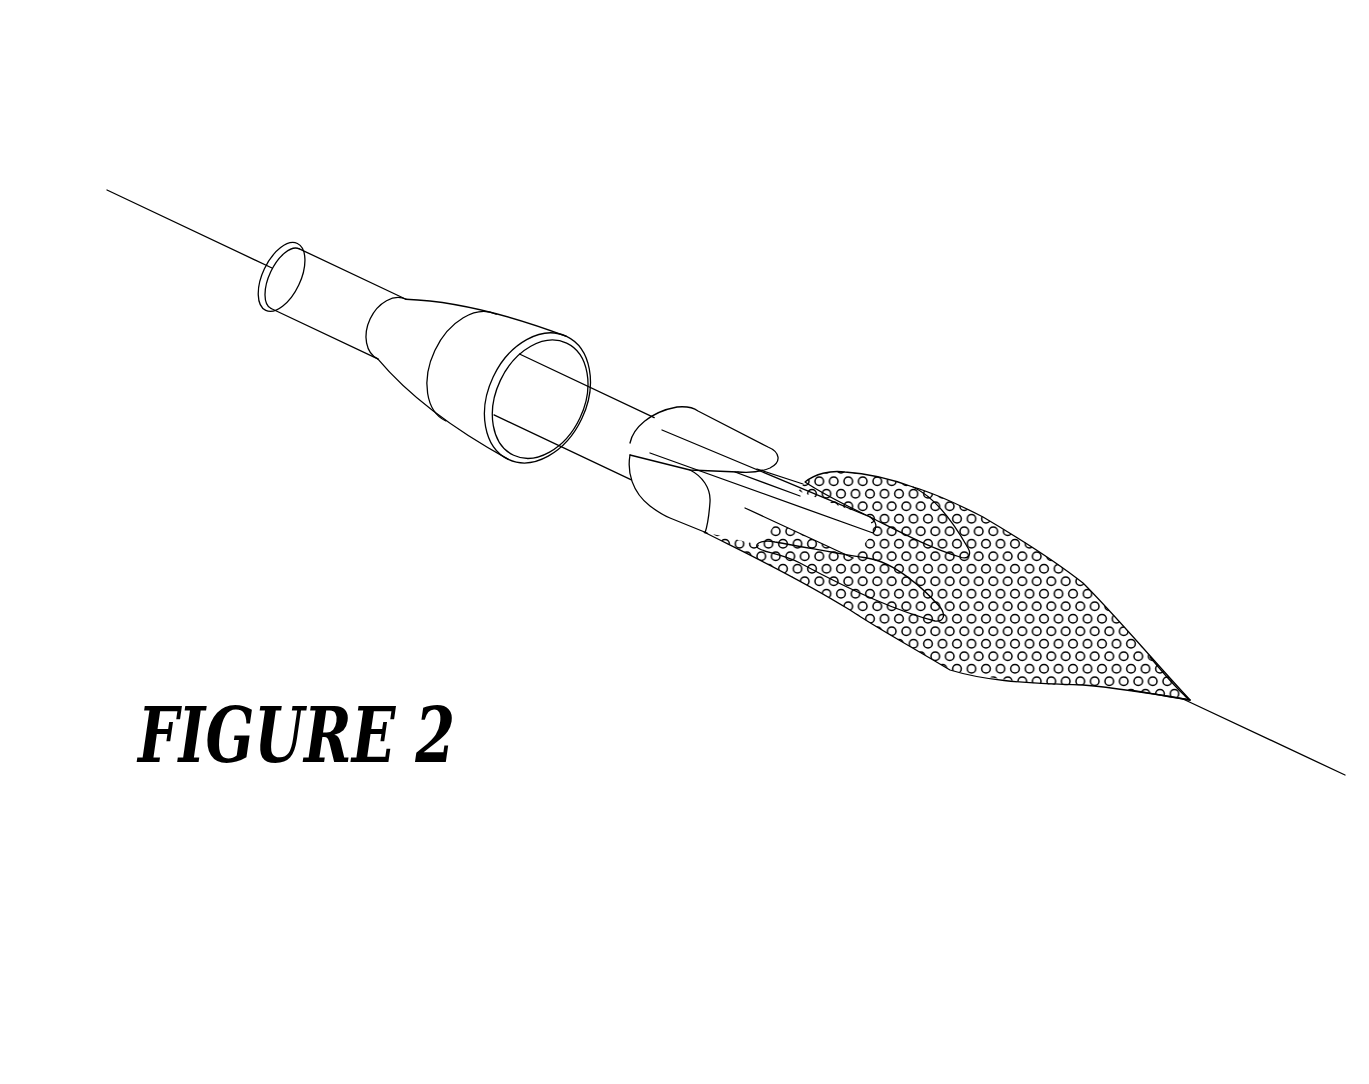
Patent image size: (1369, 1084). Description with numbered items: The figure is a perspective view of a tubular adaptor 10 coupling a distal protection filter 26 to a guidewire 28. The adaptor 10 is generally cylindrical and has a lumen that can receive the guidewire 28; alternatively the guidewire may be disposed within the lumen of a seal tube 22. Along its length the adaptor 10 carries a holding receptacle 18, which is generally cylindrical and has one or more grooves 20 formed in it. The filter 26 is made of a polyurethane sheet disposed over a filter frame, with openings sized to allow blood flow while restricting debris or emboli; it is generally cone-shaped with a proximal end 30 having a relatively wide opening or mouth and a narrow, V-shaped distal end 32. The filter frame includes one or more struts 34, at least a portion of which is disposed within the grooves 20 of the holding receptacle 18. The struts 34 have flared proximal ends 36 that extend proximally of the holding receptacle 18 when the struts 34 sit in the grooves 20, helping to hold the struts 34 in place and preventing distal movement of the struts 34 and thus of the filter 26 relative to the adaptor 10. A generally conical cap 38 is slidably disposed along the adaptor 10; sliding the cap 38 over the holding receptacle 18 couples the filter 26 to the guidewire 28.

The tubular adaptor 10 is at (610, 393).
The holding receptacle 18 is at (722, 422).
The grooves 20 is at (688, 420).
The seal tube 22 is at (905, 485).
The distal protection filter 26 is at (1063, 560).
The guidewire 28 is at (128, 200).
The proximal end 30 is at (805, 475).
The distal end 32 is at (1180, 699).
The struts 34 is at (770, 505).
The flared proximal ends 36 is at (637, 443).
The cap 38 is at (420, 356).